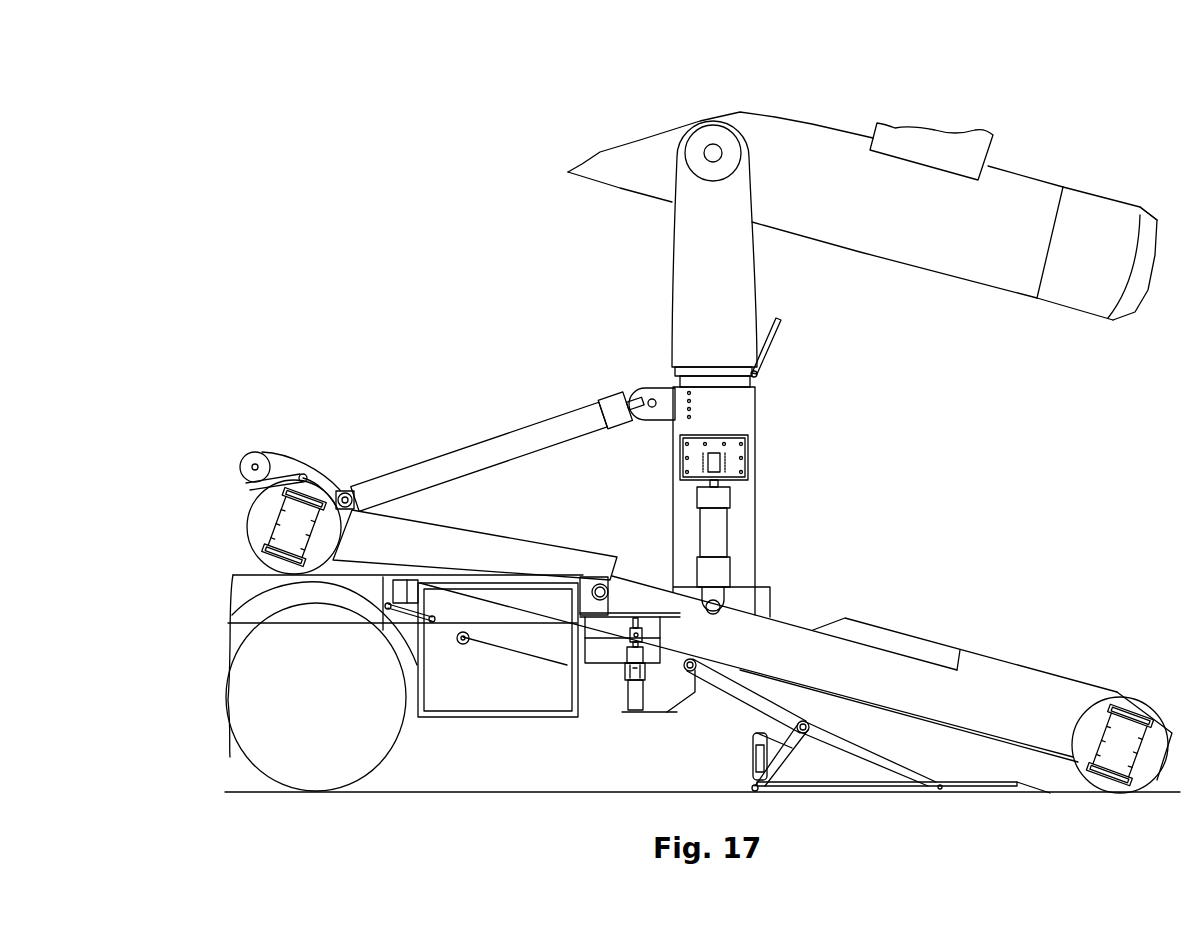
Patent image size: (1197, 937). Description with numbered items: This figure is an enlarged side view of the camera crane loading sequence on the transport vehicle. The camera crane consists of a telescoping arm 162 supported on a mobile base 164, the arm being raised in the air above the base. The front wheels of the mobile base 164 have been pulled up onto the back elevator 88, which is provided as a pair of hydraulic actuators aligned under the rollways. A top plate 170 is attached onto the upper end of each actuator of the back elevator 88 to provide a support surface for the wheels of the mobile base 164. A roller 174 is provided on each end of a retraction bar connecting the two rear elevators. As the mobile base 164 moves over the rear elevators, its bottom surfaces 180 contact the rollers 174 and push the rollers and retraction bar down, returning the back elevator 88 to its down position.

The telescoping arm 162 is at (951, 265).
The mobile base 164 is at (790, 630).
The top plate 170 is at (598, 585).
The roller 174 is at (652, 617).
The back elevator 88 is at (632, 685).
The bottom surfaces 180 is at (660, 668).